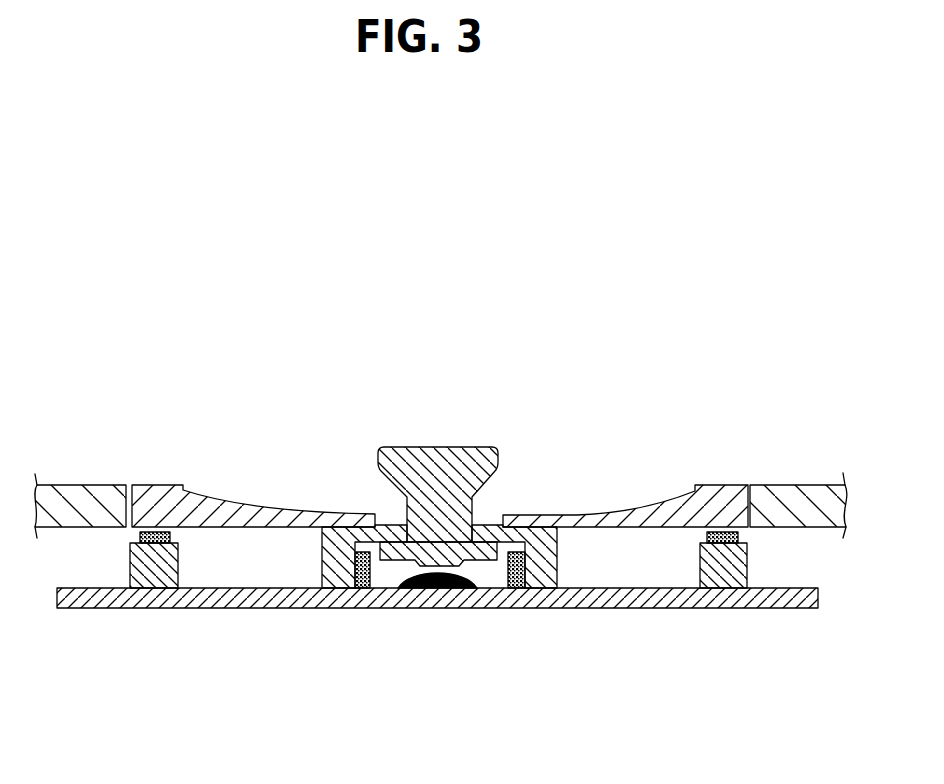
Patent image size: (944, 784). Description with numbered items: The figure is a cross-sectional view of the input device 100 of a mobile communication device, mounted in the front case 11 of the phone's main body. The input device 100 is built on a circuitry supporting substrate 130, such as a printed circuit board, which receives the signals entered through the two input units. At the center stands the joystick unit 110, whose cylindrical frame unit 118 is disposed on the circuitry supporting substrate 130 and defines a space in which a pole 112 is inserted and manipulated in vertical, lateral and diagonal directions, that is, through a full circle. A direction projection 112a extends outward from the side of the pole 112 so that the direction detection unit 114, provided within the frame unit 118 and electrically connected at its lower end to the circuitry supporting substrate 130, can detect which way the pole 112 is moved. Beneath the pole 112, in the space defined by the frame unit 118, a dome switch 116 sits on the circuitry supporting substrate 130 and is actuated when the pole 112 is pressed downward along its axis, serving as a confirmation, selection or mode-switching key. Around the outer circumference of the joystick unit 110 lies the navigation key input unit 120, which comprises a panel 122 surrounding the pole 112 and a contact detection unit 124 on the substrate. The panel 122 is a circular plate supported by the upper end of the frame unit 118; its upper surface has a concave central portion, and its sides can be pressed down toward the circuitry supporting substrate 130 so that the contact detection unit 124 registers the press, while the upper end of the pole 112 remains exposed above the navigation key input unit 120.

The input device 100 is at (836, 318).
The front case 11 is at (798, 517).
The joystick unit 110 is at (620, 331).
The pole 112 is at (403, 447).
The direction projection 112a is at (487, 558).
The direction detection unit 114 is at (508, 524).
The dome switch 116 is at (448, 572).
The frame unit 118 is at (541, 512).
The navigation key input unit 120 is at (232, 330).
The panel 122 is at (189, 493).
The contact detection unit 124 is at (146, 535).
The circuitry supporting substrate 130 is at (720, 602).